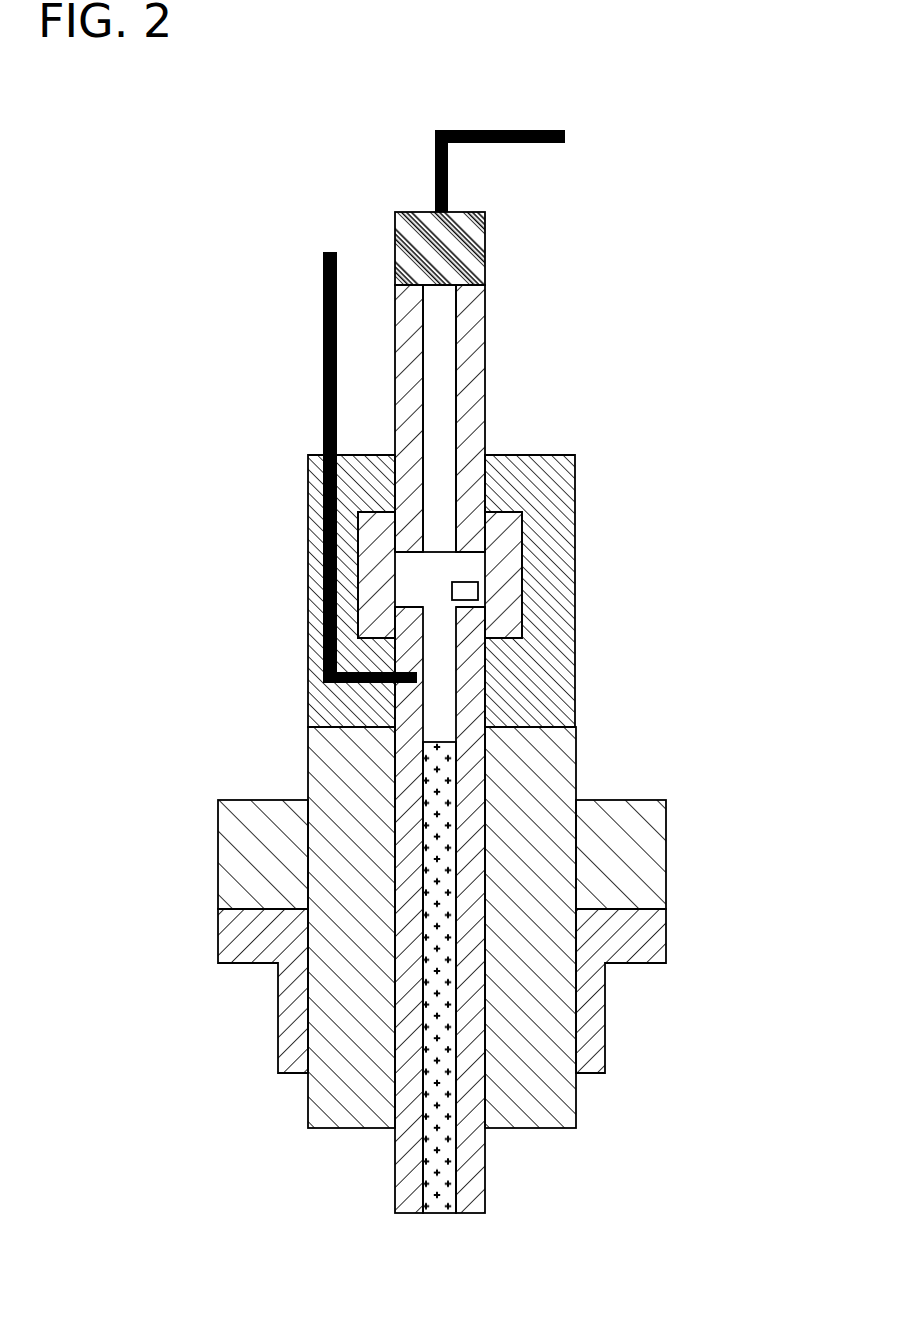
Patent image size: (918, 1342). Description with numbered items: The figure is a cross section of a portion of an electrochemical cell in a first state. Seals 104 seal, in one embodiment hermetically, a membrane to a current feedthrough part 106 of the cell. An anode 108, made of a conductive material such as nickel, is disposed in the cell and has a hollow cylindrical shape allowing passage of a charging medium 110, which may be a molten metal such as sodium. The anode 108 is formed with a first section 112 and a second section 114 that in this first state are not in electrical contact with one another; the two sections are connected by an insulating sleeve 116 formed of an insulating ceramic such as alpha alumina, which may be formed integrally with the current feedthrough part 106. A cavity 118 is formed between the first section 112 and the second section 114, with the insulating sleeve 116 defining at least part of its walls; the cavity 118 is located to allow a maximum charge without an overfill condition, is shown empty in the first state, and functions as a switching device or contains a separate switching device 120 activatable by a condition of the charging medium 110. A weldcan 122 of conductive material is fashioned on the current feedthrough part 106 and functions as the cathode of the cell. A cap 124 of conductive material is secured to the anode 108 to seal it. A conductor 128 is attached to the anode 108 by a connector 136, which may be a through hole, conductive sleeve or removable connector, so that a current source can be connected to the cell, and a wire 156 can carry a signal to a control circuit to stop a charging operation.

The seals 104 is at (650, 938).
The current feedthrough part 106 is at (630, 852).
The anode 108 is at (473, 338).
The charging medium 110 is at (443, 815).
The first section 112 is at (469, 472).
The second section 114 is at (467, 665).
The insulating sleeve 116 is at (515, 538).
The cavity 118 is at (410, 579).
The switching device 120 is at (467, 582).
The weldcan 122 is at (553, 490).
The cap 124 is at (460, 238).
The conductor 128 is at (322, 285).
The connector 136 is at (400, 683).
The wire 156 is at (523, 130).